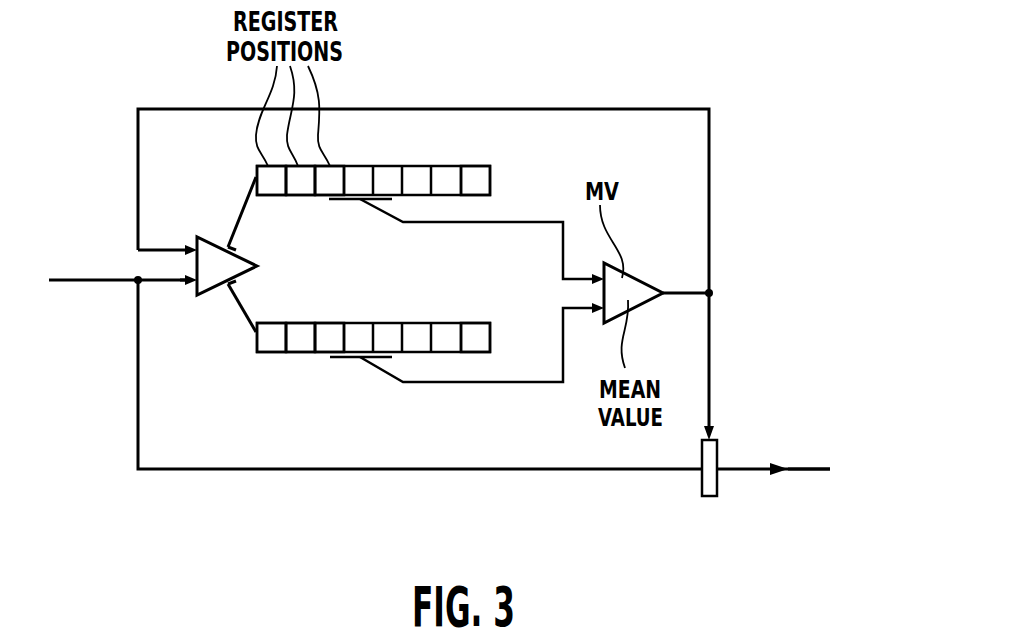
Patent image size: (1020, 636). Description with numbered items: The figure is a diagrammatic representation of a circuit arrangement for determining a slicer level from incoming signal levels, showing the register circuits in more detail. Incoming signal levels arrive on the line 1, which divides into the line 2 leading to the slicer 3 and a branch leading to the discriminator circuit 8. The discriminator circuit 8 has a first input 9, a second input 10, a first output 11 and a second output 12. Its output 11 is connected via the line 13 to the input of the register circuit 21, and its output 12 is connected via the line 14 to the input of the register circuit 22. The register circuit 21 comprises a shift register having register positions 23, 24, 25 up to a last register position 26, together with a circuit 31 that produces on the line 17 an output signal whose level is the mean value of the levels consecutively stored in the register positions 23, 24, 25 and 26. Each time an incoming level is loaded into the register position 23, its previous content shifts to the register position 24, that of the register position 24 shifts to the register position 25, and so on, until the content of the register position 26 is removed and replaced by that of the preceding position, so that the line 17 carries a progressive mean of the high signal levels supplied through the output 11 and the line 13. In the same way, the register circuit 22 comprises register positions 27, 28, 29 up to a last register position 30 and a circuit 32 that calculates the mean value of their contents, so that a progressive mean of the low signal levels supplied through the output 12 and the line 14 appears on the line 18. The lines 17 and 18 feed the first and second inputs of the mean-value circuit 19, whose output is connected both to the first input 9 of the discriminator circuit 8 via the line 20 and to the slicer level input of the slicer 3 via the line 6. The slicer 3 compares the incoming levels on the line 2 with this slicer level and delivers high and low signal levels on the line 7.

The line 1 is at (100, 285).
The line 2 is at (435, 473).
The slicer 3 is at (710, 498).
The line 6 is at (712, 352).
The line 7 is at (795, 473).
The discriminator circuit 8 is at (215, 239).
The first input 9 is at (197, 240).
The second input 10 is at (197, 290).
The first output 11 is at (238, 248).
The second output 12 is at (238, 283).
The line 13 is at (245, 203).
The line 14 is at (244, 313).
The line 17 is at (450, 223).
The line 18 is at (450, 383).
The mean-value circuit 19 is at (627, 275).
The line 20 is at (430, 109).
The register circuit 21 is at (527, 143).
The register circuit 22 is at (527, 300).
The register position 23 is at (268, 166).
The register position 24 is at (298, 166).
The register position 25 is at (330, 166).
The register position 26 is at (490, 178).
The register position 27 is at (272, 353).
The register position 28 is at (299, 323).
The register position 29 is at (330, 323).
The register position 30 is at (490, 334).
The circuit 31 is at (343, 200).
The circuit 32 is at (344, 358).